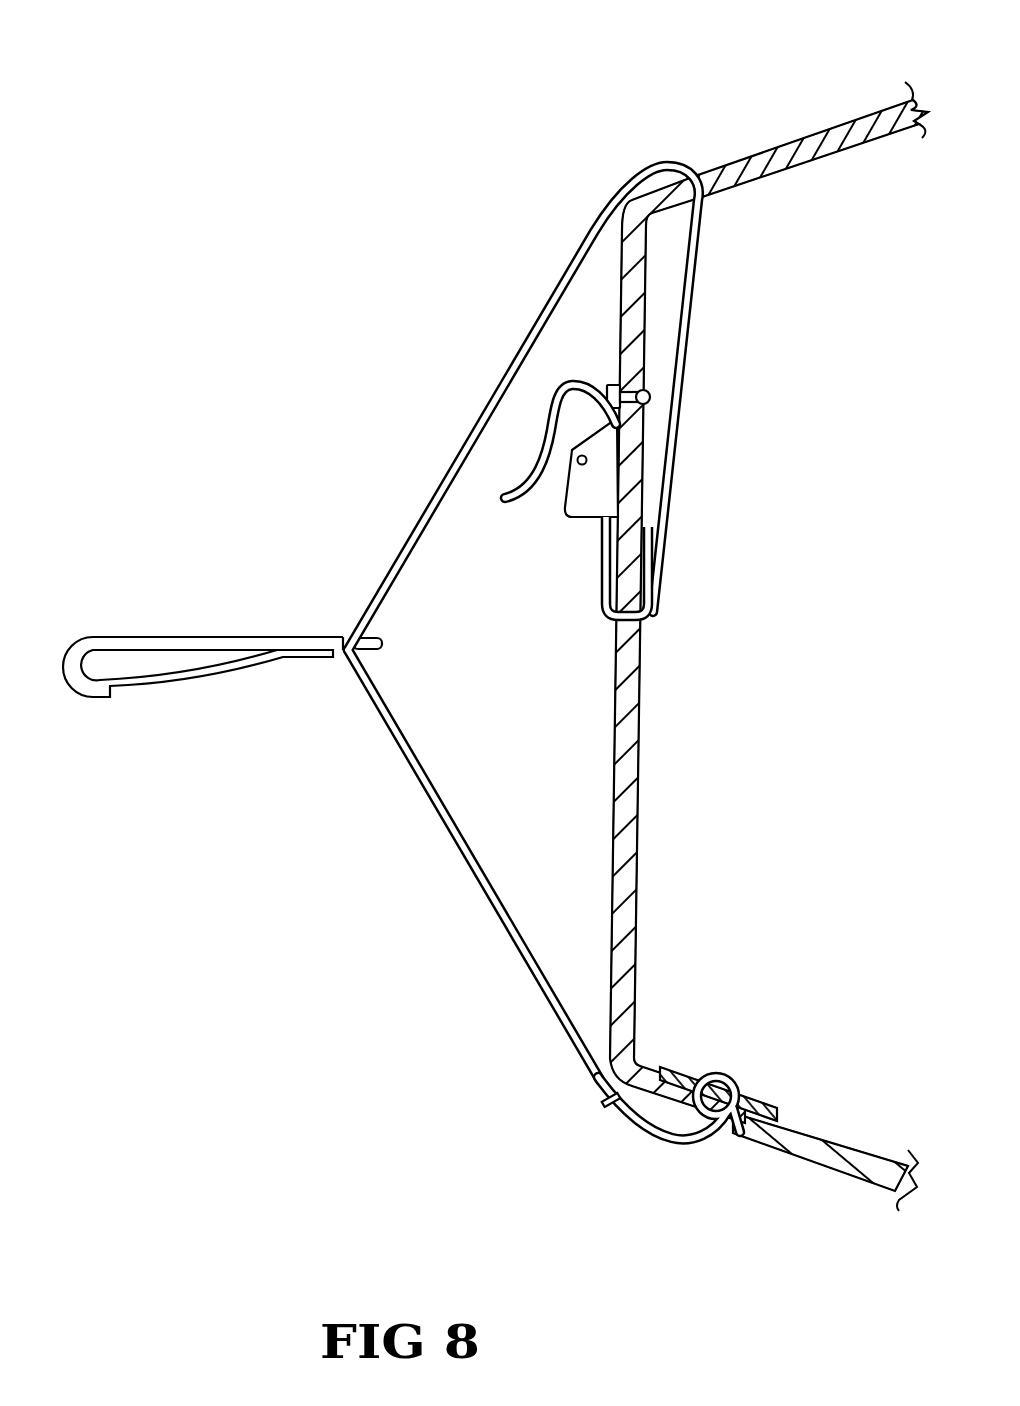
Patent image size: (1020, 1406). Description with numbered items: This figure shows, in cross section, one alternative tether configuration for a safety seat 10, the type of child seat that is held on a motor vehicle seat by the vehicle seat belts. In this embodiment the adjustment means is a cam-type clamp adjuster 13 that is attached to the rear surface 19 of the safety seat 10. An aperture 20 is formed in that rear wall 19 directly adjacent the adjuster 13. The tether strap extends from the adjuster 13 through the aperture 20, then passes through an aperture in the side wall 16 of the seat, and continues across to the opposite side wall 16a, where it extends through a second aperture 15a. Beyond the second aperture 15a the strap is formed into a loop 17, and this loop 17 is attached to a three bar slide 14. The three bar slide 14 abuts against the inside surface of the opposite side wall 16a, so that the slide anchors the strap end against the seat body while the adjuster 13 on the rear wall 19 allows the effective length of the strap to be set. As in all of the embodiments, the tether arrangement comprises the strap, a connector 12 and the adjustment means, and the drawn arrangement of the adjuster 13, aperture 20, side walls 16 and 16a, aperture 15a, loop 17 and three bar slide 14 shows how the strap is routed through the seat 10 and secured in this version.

The safety seat 10 is at (390, 864).
The connector 12 is at (198, 636).
The cam-type clamp adjuster 13 is at (565, 517).
The three bar slide 14 is at (765, 1110).
The second aperture 15a is at (722, 225).
The side wall 16 is at (772, 153).
The opposite side wall 16a is at (837, 1140).
The loop 17 is at (713, 1140).
The rear surface 19 is at (612, 772).
The aperture 20 is at (662, 618).